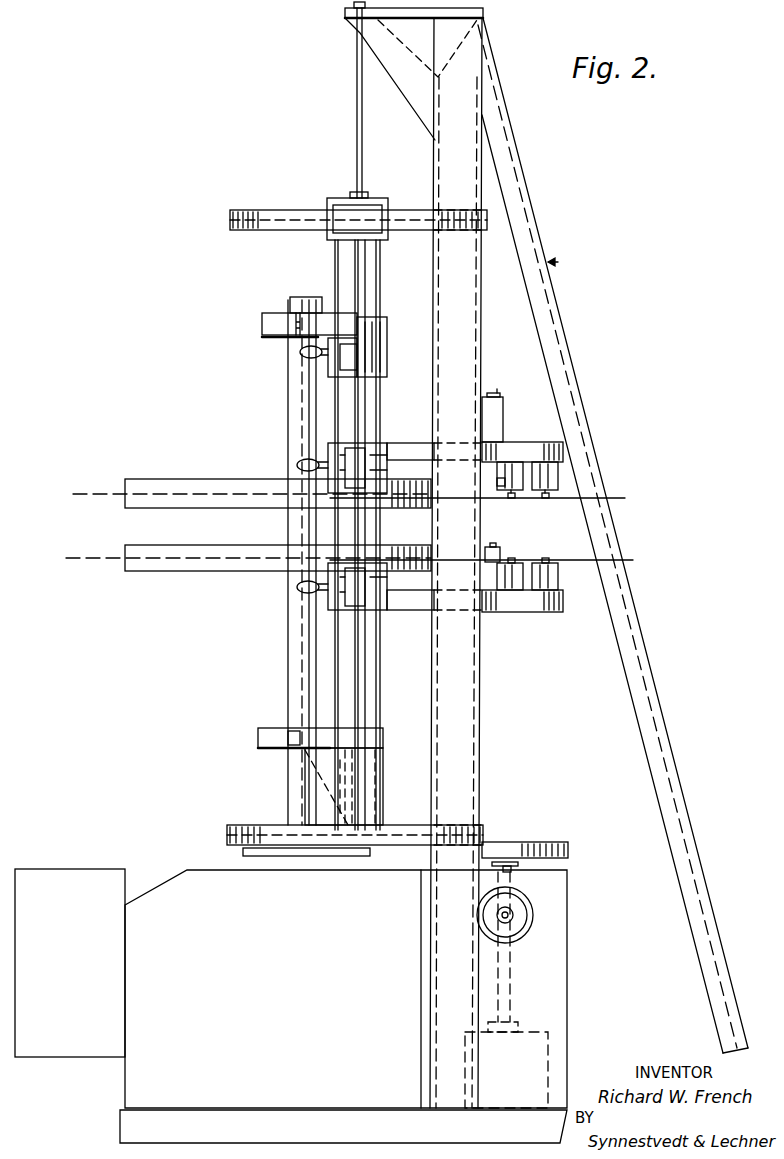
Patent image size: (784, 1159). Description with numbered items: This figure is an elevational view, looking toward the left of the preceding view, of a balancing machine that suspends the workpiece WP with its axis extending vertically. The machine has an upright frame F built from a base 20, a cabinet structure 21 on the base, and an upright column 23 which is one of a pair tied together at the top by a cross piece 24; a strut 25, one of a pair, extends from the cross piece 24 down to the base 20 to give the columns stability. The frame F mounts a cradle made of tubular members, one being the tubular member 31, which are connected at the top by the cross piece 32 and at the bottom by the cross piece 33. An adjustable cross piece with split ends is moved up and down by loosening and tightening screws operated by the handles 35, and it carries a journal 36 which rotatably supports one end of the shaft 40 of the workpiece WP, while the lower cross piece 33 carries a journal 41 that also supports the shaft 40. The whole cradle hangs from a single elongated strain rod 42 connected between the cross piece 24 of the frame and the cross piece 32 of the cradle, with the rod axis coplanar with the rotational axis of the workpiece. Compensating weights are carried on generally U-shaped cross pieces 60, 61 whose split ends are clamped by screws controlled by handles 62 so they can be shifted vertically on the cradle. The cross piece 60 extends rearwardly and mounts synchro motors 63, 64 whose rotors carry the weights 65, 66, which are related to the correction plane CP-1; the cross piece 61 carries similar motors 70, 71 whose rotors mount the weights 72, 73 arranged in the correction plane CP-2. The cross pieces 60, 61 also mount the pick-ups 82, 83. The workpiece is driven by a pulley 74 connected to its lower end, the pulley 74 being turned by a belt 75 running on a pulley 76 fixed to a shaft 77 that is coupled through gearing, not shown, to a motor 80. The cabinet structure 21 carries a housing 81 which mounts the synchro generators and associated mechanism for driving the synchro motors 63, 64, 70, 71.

The base 20 is at (362, 1145).
The cabinet structure 21 is at (289, 1011).
The upright column 23 is at (468, 712).
The cross piece 24 is at (358, 36).
The strut 25 is at (613, 535).
The tubular member 31 is at (367, 697).
The cross piece 32 is at (345, 198).
The cross piece 33 is at (357, 740).
The handle 35 is at (303, 360).
The journal 36 is at (277, 318).
The shaft 40 is at (288, 678).
The journal 41 is at (270, 728).
The strain rod 42 is at (357, 154).
The cross piece 60 is at (400, 455).
The cross piece 61 is at (405, 612).
The handle 62 is at (297, 466).
The synchro motor 63 is at (500, 486).
The synchro motor 64 is at (557, 473).
The weight 65 is at (514, 498).
The weight 66 is at (548, 498).
The motor 70 is at (519, 585).
The motor 71 is at (557, 580).
The weight 72 is at (516, 560).
The weight 73 is at (549, 560).
The pulley 74 is at (243, 852).
The belt 75 is at (395, 855).
The pulley 76 is at (530, 842).
The shaft 77 is at (518, 868).
The motor 80 is at (547, 1055).
The housing 81 is at (75, 976).
The pick-up 82 is at (500, 412).
The pick-up 83 is at (505, 552).
The workpiece WP is at (171, 479).
The correction plane CP-1 is at (625, 498).
The correction plane CP-2 is at (633, 560).
The frame F is at (560, 263).